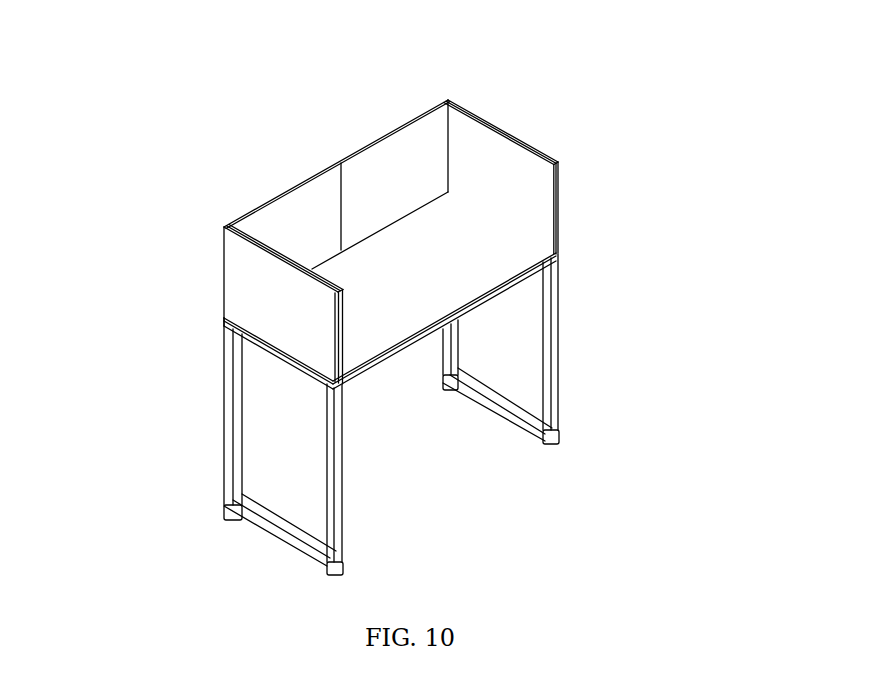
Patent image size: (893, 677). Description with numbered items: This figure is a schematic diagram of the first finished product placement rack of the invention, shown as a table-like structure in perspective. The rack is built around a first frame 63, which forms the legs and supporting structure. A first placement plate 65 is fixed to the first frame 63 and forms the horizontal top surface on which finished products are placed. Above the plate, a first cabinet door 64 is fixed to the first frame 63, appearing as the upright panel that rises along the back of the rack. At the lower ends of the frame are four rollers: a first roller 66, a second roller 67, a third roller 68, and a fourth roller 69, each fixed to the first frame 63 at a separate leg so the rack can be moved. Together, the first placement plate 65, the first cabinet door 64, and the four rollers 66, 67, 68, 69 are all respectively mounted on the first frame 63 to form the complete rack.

The first frame 63 is at (237, 416).
The first cabinet door 64 is at (323, 173).
The first placement plate 65 is at (477, 256).
The first roller 66 is at (227, 513).
The second roller 67 is at (343, 568).
The third roller 68 is at (560, 443).
The fourth roller 69 is at (450, 387).